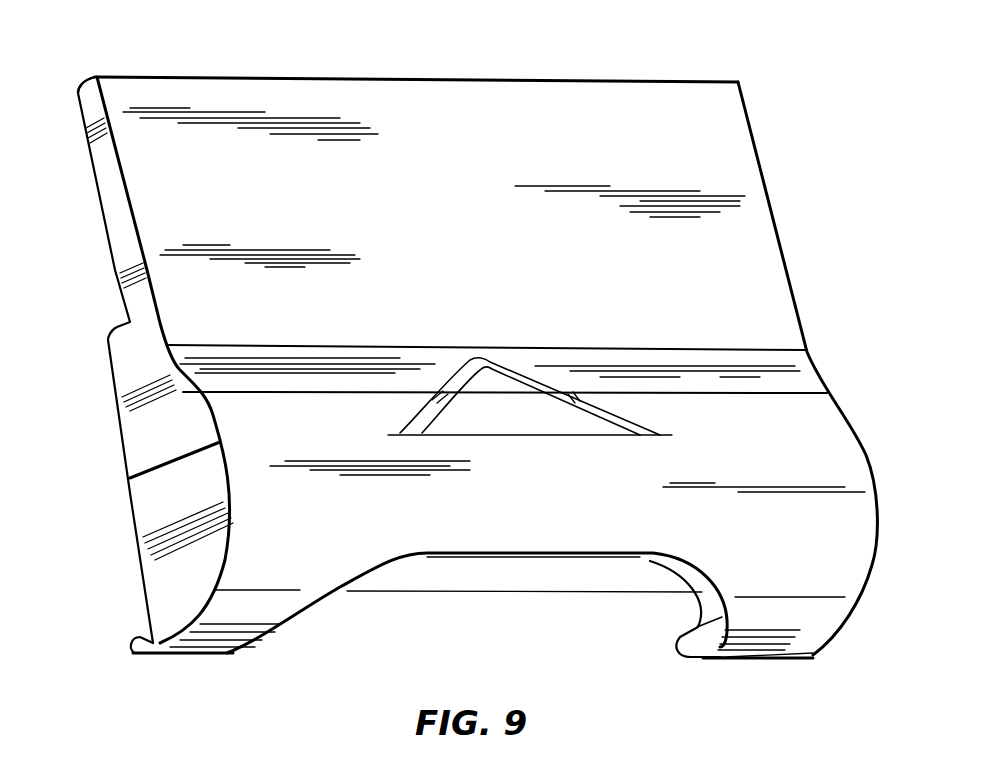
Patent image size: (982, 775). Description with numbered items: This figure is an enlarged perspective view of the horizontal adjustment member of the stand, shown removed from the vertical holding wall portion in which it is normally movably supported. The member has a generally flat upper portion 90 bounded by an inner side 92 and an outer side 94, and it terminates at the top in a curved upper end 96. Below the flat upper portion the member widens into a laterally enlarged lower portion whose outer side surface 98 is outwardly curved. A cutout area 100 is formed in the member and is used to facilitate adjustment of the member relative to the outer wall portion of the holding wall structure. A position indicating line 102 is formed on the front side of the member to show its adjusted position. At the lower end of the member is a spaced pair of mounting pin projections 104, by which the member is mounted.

The upper portion 90 is at (123, 233).
The inner side 92 is at (100, 203).
The outer side 94 is at (445, 208).
The curved upper end 96 is at (78, 93).
The outwardly curved outer side surface 98 is at (560, 502).
The cutout area 100 is at (523, 378).
The position indicating line 102 is at (155, 462).
The mounting pin projections 104 is at (133, 627).